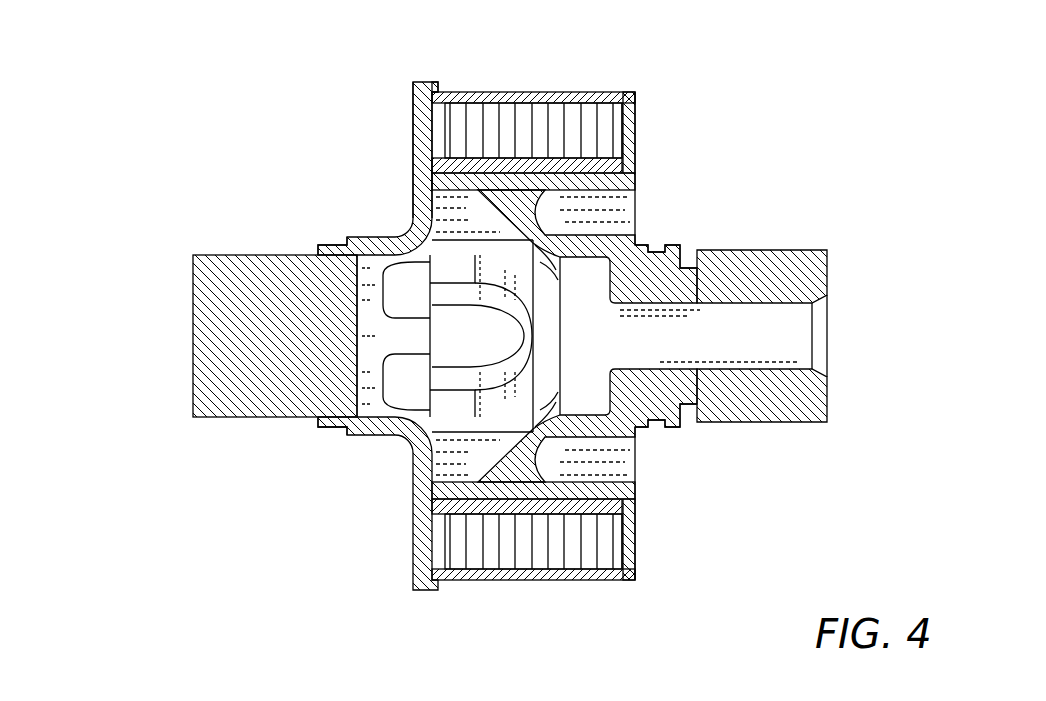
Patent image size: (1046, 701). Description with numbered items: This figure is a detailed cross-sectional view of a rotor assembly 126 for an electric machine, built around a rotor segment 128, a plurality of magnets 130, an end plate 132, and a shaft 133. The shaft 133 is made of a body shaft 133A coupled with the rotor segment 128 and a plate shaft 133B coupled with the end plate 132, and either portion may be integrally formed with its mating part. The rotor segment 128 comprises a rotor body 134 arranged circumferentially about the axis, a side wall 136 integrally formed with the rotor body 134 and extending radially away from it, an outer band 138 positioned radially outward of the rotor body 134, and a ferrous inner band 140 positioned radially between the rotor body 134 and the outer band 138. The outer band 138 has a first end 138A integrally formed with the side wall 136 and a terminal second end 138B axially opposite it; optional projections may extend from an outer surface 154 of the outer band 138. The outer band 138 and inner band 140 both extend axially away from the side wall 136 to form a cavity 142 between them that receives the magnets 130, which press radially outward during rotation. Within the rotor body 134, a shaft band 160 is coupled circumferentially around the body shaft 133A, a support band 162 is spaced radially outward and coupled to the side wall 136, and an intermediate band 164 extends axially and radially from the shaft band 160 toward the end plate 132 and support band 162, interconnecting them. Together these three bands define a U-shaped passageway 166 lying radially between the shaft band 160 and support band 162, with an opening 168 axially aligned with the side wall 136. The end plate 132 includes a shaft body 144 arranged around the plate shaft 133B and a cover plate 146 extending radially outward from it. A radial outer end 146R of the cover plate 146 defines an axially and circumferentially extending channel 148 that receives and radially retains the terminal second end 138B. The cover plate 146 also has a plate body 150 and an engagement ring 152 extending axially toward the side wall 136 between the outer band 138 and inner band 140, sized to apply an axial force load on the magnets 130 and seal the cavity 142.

The rotor assembly 126 is at (112, 93).
The rotor segment 128 is at (682, 102).
The plurality of magnets 130 is at (563, 130).
The end plate 132 is at (333, 140).
The shaft 133 is at (150, 205).
The body shaft 133A is at (765, 250).
The plate shaft 133B is at (258, 253).
The rotor body 134 is at (657, 222).
The side wall 136 is at (638, 130).
The outer band 138 is at (488, 90).
The first end 138A is at (622, 90).
The terminal second end 138B is at (435, 90).
The inner band 140 is at (607, 505).
The cavity 142 is at (453, 125).
The shaft body 144 is at (325, 240).
The cover plate 146 is at (387, 200).
The radial outer end 146R is at (410, 103).
The channel 148 is at (428, 125).
The plate body 150 is at (428, 470).
The engagement ring 152 is at (440, 550).
The outer surface 154 is at (543, 90).
The shaft band 160 is at (597, 235).
The support band 162 is at (577, 183).
The intermediate band 164 is at (522, 210).
The U-shaped passageway 166 is at (572, 215).
The opening 168 is at (630, 212).